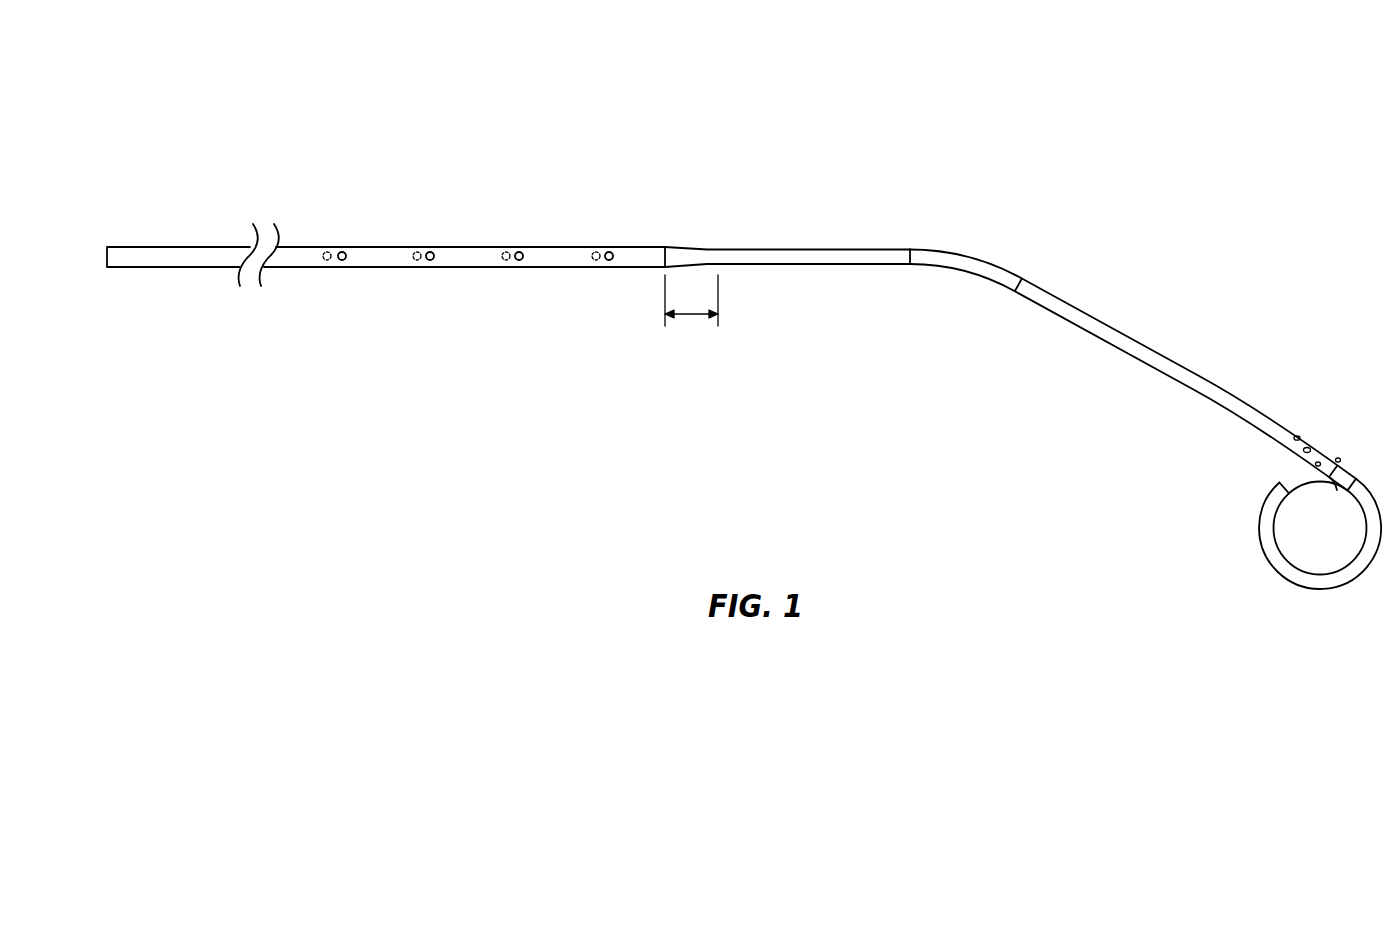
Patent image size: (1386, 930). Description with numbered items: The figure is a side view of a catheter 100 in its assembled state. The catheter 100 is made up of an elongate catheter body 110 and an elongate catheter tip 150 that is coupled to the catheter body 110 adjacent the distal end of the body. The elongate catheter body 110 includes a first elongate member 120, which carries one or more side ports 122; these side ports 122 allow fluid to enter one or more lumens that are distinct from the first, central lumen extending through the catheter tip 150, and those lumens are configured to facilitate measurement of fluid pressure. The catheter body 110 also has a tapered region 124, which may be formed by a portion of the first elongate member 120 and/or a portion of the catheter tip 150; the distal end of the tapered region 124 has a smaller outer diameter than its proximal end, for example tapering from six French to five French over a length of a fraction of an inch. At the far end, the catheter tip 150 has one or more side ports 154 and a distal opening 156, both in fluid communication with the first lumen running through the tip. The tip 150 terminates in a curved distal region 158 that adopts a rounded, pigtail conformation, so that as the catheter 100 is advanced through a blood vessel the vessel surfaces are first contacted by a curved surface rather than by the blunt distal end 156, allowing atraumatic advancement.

The catheter 100 is at (935, 141).
The elongate catheter body 110 is at (311, 208).
The first elongate member 120 is at (298, 262).
The side ports 122 is at (328, 251).
The tapered region 124 is at (692, 317).
The elongate catheter tip 150 is at (1254, 355).
The side ports 154 is at (1338, 458).
The distal opening 156 is at (1337, 490).
The curved distal region 158 is at (1337, 592).